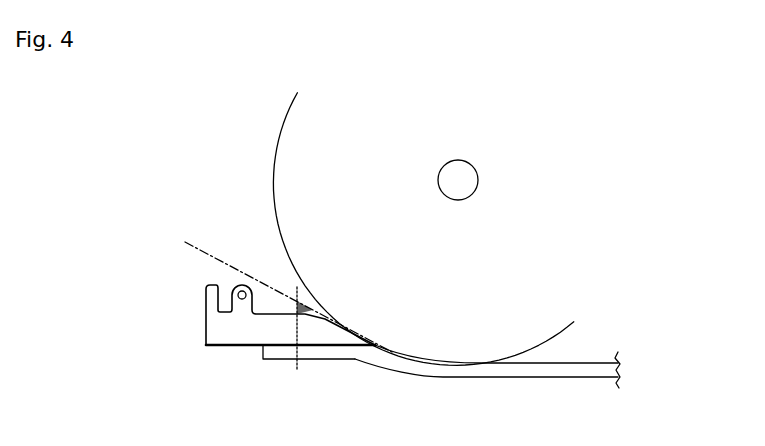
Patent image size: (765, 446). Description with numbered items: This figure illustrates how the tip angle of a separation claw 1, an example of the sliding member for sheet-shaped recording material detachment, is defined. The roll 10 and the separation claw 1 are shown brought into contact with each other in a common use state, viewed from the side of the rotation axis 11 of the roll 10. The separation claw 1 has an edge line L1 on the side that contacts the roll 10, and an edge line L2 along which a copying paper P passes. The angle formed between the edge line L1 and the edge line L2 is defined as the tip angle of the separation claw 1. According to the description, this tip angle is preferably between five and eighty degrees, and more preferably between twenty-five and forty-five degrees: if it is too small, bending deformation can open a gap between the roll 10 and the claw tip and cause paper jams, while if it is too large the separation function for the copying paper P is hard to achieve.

The roll 10 is at (282, 127).
The rotation axis 11 is at (455, 200).
The separation claw 1 is at (218, 346).
The copying paper P is at (478, 377).
The edge line L1 is at (213, 256).
The edge line L2 is at (241, 348).